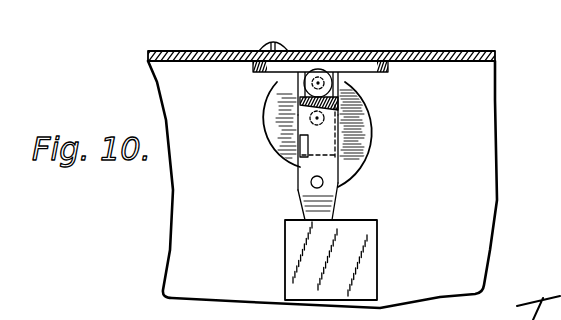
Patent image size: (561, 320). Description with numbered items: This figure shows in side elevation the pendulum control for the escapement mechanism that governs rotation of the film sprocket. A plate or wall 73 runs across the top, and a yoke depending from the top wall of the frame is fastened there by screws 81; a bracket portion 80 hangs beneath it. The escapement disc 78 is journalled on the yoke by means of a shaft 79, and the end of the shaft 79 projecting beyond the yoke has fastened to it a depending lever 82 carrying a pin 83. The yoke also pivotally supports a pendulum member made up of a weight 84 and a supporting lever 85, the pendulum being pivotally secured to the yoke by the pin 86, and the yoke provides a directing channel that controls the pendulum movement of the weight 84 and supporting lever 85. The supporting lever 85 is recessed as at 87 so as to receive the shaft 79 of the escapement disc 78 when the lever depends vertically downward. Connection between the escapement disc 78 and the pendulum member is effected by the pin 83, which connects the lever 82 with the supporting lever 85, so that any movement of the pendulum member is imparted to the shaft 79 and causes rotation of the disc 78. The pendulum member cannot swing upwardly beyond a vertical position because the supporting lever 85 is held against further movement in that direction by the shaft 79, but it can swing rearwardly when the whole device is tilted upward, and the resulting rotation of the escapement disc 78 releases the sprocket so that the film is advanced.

The mounting plate 73 is at (413, 60).
The screws 81 is at (275, 49).
The pin 86 is at (320, 72).
The bracket 80 is at (345, 90).
The recess 87 is at (305, 112).
The escapement disc 78 is at (272, 140).
The shaft 79 is at (310, 121).
The depending lever 82 is at (345, 150).
The pin 83 is at (308, 182).
The supporting lever 85 is at (340, 198).
The weight 84 is at (362, 256).